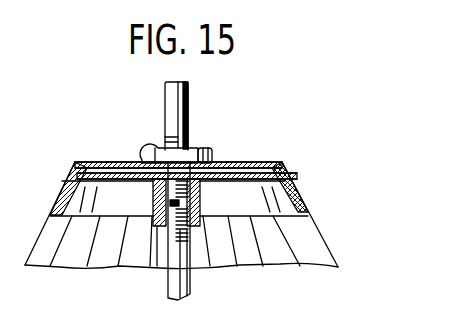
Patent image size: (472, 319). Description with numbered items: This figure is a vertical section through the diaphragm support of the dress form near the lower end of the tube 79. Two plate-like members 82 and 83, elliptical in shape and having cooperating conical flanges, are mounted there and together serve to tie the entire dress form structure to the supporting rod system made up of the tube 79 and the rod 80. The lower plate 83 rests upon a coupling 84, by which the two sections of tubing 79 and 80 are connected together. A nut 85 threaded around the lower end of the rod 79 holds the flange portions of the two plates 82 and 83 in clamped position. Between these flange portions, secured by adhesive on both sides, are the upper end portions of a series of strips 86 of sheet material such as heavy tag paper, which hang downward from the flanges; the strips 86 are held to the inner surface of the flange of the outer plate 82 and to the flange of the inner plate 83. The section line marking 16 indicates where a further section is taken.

The tube 79 is at (178, 114).
The nut 85 is at (207, 148).
The plate-like member 82 is at (263, 162).
The coupling 84 is at (157, 199).
The plate-like member 83 is at (229, 179).
The rod 80 is at (172, 284).
The strips 86 is at (103, 258).
The section line 16- 16 is at (60, 197).